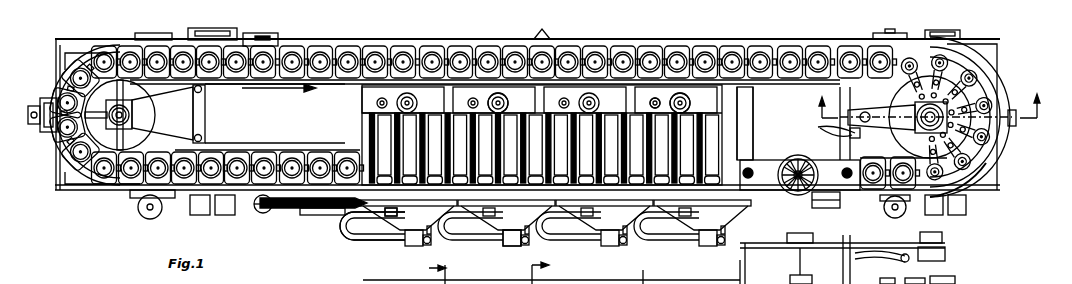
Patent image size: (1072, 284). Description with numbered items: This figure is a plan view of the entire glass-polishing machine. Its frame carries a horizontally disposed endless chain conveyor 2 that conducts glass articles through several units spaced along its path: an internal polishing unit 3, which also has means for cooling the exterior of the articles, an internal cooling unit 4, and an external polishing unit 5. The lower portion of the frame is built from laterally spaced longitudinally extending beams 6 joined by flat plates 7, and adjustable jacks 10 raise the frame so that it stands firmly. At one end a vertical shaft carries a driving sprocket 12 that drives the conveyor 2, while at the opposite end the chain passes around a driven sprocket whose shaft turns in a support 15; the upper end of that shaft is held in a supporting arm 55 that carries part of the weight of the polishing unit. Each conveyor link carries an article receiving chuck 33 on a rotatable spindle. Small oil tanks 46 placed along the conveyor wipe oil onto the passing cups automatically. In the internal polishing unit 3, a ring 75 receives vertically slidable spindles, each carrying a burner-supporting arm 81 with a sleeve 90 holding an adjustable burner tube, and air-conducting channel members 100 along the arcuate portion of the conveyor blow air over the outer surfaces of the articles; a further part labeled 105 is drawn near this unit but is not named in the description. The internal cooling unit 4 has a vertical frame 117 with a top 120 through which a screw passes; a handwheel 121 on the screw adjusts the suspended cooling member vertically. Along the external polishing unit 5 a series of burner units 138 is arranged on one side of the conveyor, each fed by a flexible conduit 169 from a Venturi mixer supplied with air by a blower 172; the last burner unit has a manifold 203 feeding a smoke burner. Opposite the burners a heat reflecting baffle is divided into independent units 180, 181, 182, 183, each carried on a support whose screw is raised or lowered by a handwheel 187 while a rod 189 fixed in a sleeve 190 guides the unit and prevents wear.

The endless chain conveyor 2 is at (63, 147).
The internal polishing unit 3 is at (990, 80).
The internal cooling unit 4 is at (768, 163).
The external polishing unit 5 is at (433, 207).
The longitudinally extending beams 6 is at (927, 104).
The flat plates 7 is at (547, 271).
The jacks 10 is at (152, 214).
The driving sprocket 12 is at (119, 152).
The support 15 is at (430, 271).
The article receiving chuck 33 is at (262, 158).
The oil tanks 46 is at (240, 75).
The supporting arm 55 is at (836, 127).
The ring 75 is at (957, 283).
The burner-supporting arm 81 is at (993, 137).
The sleeve 90 is at (990, 157).
The air-conducting channel members 100 is at (980, 174).
The support rod 105 is at (815, 268).
The frame 117 is at (750, 193).
The top 120 is at (775, 190).
The handwheel 121 is at (800, 157).
The burner units 138 is at (393, 212).
The flexible conduit 169 is at (350, 230).
The blower 172 is at (292, 208).
The baffle unit 180 is at (370, 130).
The baffle unit 181 is at (505, 283).
The baffle unit 182 is at (601, 283).
The baffle unit 183 is at (693, 283).
The handwheel 187 is at (690, 106).
The rod 189 is at (499, 106).
The sleeve 190 is at (660, 105).
The manifold 203 is at (458, 283).